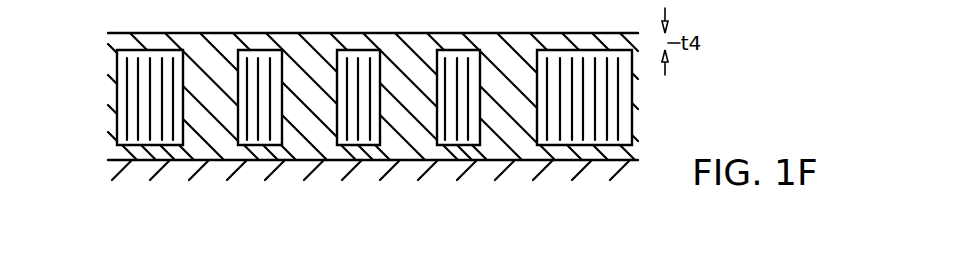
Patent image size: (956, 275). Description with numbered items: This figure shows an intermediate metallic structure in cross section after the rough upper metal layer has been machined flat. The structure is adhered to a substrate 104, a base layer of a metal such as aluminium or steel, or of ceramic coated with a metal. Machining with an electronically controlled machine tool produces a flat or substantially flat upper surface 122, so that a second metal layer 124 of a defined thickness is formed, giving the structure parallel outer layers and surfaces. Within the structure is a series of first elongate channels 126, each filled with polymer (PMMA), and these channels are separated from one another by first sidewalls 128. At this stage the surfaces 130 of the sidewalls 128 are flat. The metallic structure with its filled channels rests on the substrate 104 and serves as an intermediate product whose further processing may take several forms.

The substrate 104 is at (332, 173).
The upper surface 122 is at (583, 33).
The second metal layer 124 is at (353, 50).
The first elongate channels 126 is at (533, 157).
The first sidewalls 128 is at (302, 72).
The surfaces of the sidewalls 130 is at (247, 117).